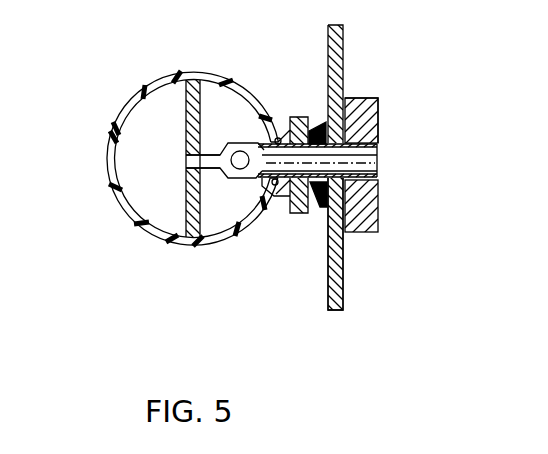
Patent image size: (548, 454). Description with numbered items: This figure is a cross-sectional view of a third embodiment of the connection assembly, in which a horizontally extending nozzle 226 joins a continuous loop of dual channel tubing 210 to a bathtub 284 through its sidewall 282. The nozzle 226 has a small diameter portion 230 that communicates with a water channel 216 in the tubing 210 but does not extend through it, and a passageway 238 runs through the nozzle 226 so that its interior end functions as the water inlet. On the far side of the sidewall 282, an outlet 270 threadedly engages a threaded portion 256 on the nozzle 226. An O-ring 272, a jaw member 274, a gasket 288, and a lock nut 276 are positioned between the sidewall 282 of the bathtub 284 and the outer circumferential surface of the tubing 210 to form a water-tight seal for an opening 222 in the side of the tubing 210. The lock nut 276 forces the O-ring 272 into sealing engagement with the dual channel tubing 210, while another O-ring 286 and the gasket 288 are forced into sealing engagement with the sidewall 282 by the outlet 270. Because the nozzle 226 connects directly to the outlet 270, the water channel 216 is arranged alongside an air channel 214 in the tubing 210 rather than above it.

The dual channel tubing 210 is at (110, 177).
The air channel 214 is at (208, 102).
The water channel 216 is at (165, 110).
The opening 222 is at (250, 176).
The nozzle 226 is at (216, 112).
The small diameter portion 230 is at (212, 160).
The passageway 238 is at (380, 165).
The threaded portion 256 is at (366, 195).
The outlet 270 is at (374, 125).
The O-ring 272 is at (276, 138).
The jaw member 274 is at (273, 197).
The lock nut 276 is at (302, 213).
The sidewall 282 is at (343, 49).
The bathtub 284 is at (344, 291).
The O-ring 286 is at (377, 100).
The gasket 288 is at (327, 185).